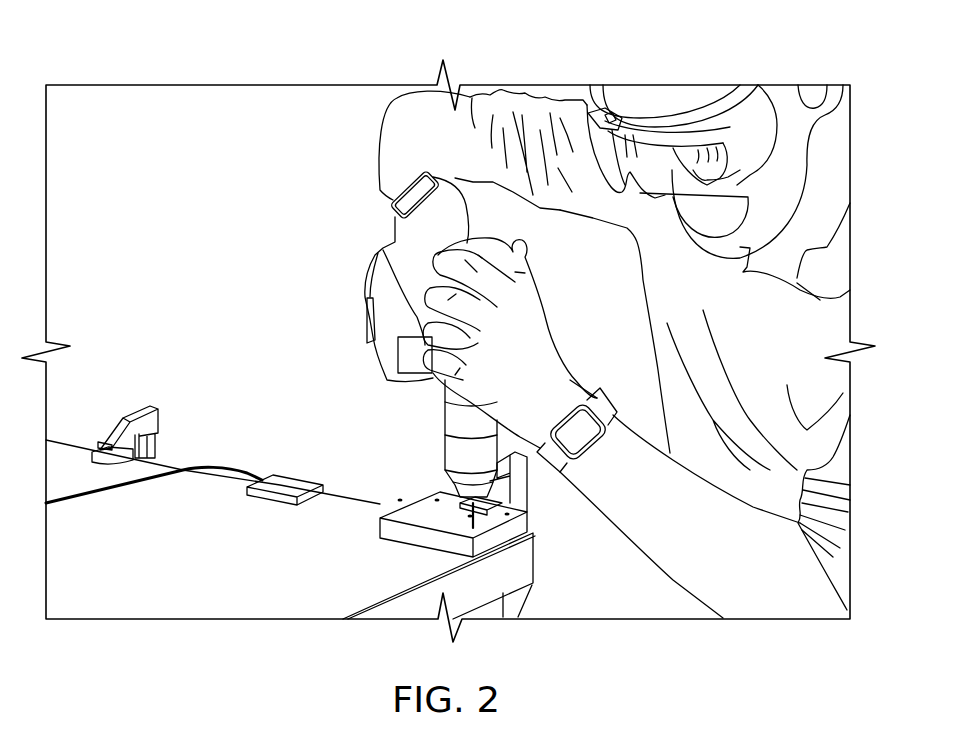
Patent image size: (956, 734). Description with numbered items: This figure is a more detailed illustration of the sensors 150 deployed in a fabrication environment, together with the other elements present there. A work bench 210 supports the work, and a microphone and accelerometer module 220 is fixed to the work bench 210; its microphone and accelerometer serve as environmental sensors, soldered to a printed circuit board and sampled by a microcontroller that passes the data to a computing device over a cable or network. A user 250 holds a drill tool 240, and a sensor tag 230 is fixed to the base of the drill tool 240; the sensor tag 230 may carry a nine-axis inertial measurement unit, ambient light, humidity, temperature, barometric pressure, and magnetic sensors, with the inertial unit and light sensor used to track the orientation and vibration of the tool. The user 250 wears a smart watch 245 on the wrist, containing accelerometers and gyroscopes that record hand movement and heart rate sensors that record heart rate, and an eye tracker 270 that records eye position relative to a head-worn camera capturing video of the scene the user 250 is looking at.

The sensors 150 is at (244, 61).
The work bench 210 is at (250, 584).
The microphone and accelerometer module 220 is at (290, 488).
The sensor tag 230 is at (400, 352).
The drill tool 240 is at (396, 193).
The smart watch 245 is at (578, 443).
The user 250 is at (788, 112).
The eye tracker 270 is at (590, 108).